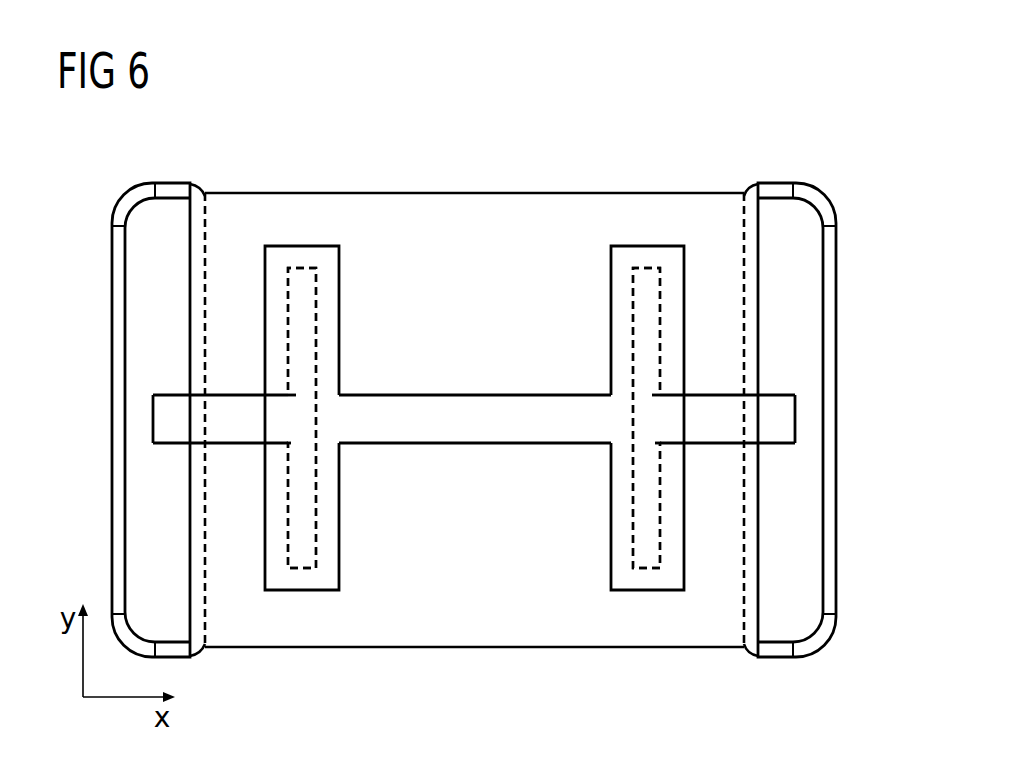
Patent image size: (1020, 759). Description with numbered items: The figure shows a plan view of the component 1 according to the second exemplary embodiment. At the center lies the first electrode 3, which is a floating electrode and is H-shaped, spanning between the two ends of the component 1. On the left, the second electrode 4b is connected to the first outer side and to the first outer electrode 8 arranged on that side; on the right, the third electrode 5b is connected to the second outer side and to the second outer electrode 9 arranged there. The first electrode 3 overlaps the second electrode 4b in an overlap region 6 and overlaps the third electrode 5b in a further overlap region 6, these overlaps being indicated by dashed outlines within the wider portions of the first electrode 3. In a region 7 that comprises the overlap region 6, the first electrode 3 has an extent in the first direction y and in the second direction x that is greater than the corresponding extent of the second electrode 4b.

The component 1 is at (703, 123).
The first electrode 3 is at (475, 432).
The second electrode 4b is at (299, 324).
The third electrode 5b is at (652, 325).
The overlap region 6 is at (316, 292).
The region 7 is at (340, 328).
The first outer electrode 8 is at (135, 355).
The second outer electrode 9 is at (812, 355).